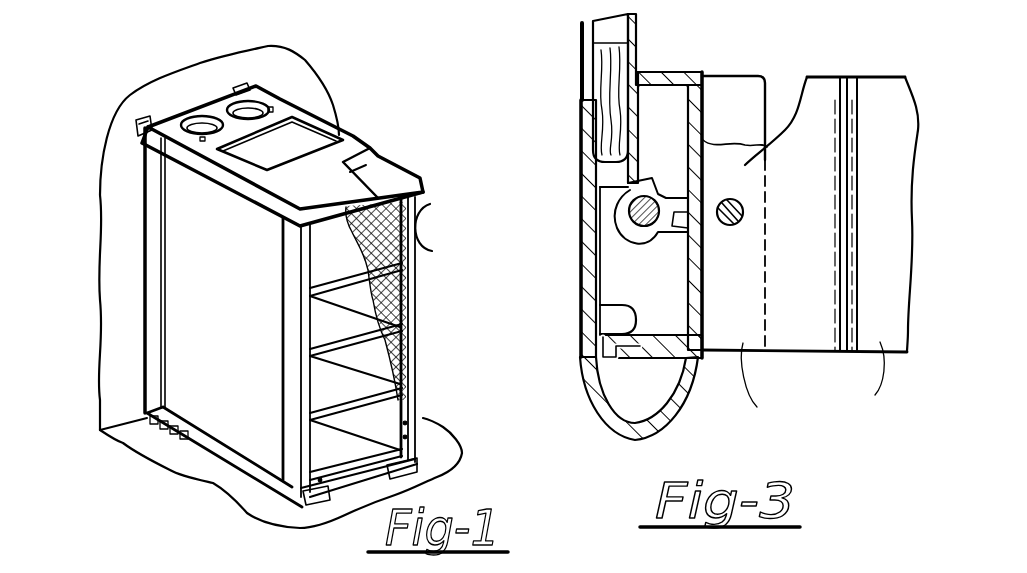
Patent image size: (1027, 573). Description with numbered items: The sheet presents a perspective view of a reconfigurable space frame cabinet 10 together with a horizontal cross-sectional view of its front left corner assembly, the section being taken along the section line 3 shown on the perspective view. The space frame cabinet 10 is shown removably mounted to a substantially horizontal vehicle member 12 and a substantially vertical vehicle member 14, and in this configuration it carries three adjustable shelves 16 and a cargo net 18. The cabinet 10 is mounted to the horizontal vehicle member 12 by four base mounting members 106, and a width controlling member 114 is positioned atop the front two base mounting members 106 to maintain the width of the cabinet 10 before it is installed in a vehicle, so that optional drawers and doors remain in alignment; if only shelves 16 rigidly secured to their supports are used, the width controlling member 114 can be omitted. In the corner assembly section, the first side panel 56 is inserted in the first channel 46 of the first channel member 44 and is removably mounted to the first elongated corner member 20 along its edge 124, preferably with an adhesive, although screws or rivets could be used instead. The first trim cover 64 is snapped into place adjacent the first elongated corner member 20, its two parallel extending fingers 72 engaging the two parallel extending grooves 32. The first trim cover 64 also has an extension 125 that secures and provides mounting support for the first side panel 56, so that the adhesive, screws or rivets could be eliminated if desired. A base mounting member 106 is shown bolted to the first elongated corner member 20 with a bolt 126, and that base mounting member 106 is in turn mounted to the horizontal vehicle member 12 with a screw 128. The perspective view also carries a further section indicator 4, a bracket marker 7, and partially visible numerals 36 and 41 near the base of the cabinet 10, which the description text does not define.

In FIG. 1, the reconfigurable space frame cabinet 10 is at (358, 88).
In FIG. 1, the horizontal vehicle member 12 is at (157, 447).
In FIG. 1, the vertical vehicle member 14 is at (123, 212).
In FIG. 1, the adjustable shelves 16 is at (410, 397).
In FIG. 1, the cargo net 18 is at (408, 300).
In FIG. 1, the bracket 7 is at (435, 227).
In FIG. 1, the section line 3- 3 is at (355, 203).
In FIG. 1, the foot 36 is at (294, 556).
In FIG. 1, the floor 41 is at (144, 562).
In FIG. 3, the first channel member 44 is at (580, 33).
In FIG. 3, the first channel 46 is at (618, 28).
In FIG. 3, the first side panel 56 is at (613, 72).
In FIG. 3, the first elongated corner member 20 is at (690, 92).
In FIG. 3, the edge 124 is at (617, 97).
In FIG. 3, the extension 125 is at (581, 130).
In FIG. 3, the bolt 126 is at (625, 202).
In FIG. 3, the screw 128 is at (733, 199).
In FIG. 3, the parallel extending grooves 32 is at (596, 313).
In FIG. 3, the parallel extending fingers 72 is at (605, 332).
In FIG. 3, the first trim cover 64 is at (683, 410).
In FIG. 3, the base mounting member 106 is at (804, 248).
In FIG. 3, the width controlling member 114 is at (831, 248).
In FIG. 3, the section line 4- 4 is at (558, 213).